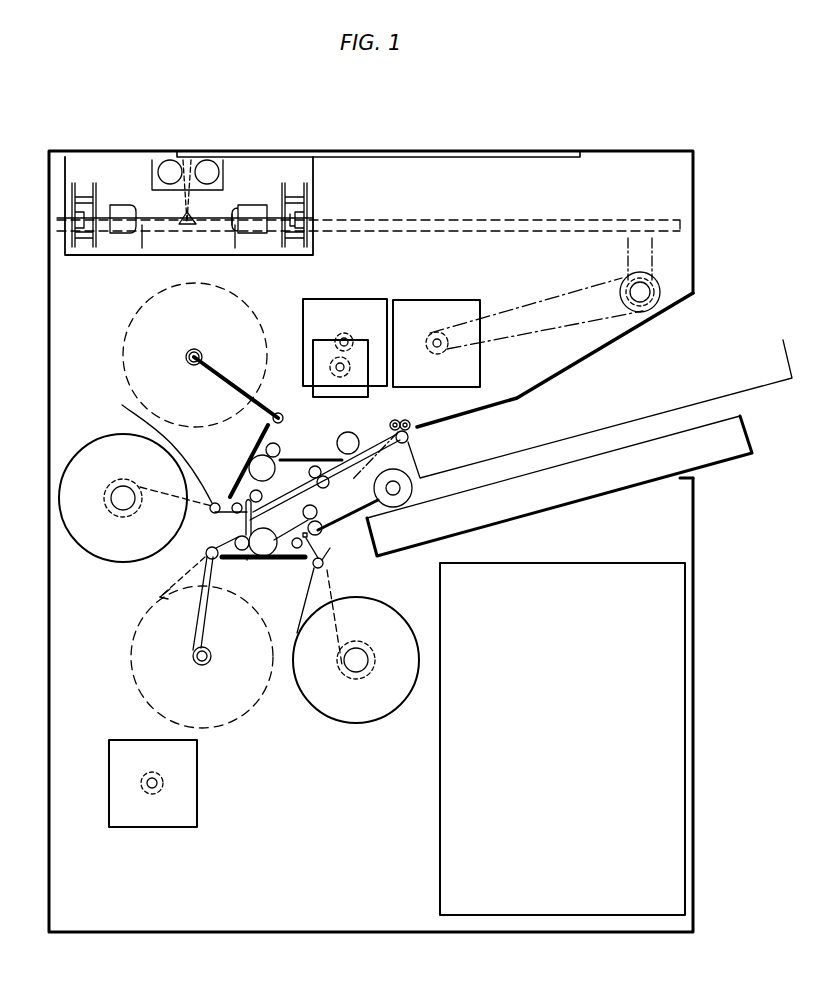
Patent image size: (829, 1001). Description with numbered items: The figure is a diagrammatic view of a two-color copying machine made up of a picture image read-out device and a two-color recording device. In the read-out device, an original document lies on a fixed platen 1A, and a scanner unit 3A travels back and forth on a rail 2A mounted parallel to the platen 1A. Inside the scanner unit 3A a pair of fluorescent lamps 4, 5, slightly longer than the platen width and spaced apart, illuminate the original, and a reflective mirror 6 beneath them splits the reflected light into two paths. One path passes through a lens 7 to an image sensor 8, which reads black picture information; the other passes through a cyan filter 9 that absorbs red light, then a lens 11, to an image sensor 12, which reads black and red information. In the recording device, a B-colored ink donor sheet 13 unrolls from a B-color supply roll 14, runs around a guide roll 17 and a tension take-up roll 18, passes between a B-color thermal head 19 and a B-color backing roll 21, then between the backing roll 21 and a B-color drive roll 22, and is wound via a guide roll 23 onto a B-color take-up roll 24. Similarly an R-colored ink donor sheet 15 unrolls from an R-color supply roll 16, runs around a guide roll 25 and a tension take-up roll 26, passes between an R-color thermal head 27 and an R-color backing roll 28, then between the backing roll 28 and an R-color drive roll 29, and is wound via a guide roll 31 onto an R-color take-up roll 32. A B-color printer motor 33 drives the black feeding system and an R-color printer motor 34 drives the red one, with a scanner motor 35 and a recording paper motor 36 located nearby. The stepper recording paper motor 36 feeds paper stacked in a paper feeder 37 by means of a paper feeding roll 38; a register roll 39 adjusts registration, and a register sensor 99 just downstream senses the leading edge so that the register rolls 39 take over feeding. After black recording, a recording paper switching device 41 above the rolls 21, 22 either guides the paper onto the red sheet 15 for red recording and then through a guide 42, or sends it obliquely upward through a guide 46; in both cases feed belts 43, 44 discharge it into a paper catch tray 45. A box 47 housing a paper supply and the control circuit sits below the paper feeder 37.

The fixed platen 1A is at (289, 151).
The rail 2A is at (415, 222).
The scanner unit 3A is at (313, 172).
The fluorescent lamp 4 is at (170, 160).
The fluorescent lamp 5 is at (207, 160).
The reflective mirror 6 is at (196, 216).
The lens 7 is at (120, 205).
The image sensor 8 is at (83, 210).
The cyan filter 9 is at (237, 208).
The lens 11 is at (257, 205).
The image sensor 12 is at (295, 212).
The B-colored ink donor sheet 13 is at (223, 540).
The B-color supply roll 14 is at (350, 722).
The R-colored ink donor sheet 15 is at (156, 445).
The R-color supply roll 16 is at (118, 560).
The guide roll 17 is at (324, 566).
The tension take-up roll 18 is at (292, 560).
The B-color thermal head 19 is at (247, 562).
The B-color backing roll 21 is at (263, 556).
The B-color drive roll 22 is at (240, 550).
The guide roll 23 is at (205, 600).
The B-color take-up roll 24 is at (203, 665).
The guide roll 25 is at (215, 503).
The tension take-up roll 26 is at (228, 510).
The R-color thermal head 27 is at (237, 503).
The R-color backing roll 28 is at (257, 452).
The R-color drive roll 29 is at (278, 447).
The guide roll 31 is at (270, 412).
The R-color take-up roll 32 is at (190, 350).
The B-color printer motor 33 is at (178, 818).
The R-color printer motor 34 is at (345, 300).
The scanner motor 35 is at (432, 300).
The recording paper motor 36 is at (330, 397).
The paper feeder 37 is at (716, 463).
The paper feeding roll 38 is at (412, 490).
The register roll 39 is at (303, 513).
The recording paper switching device 41 is at (246, 497).
The guide 42 is at (311, 459).
The feed belt 43 is at (395, 420).
The feed belt 44 is at (350, 475).
The paper catch tray 45 is at (764, 378).
The guide 46 is at (268, 500).
The box 47 is at (607, 562).
The register sensor 99 is at (312, 540).